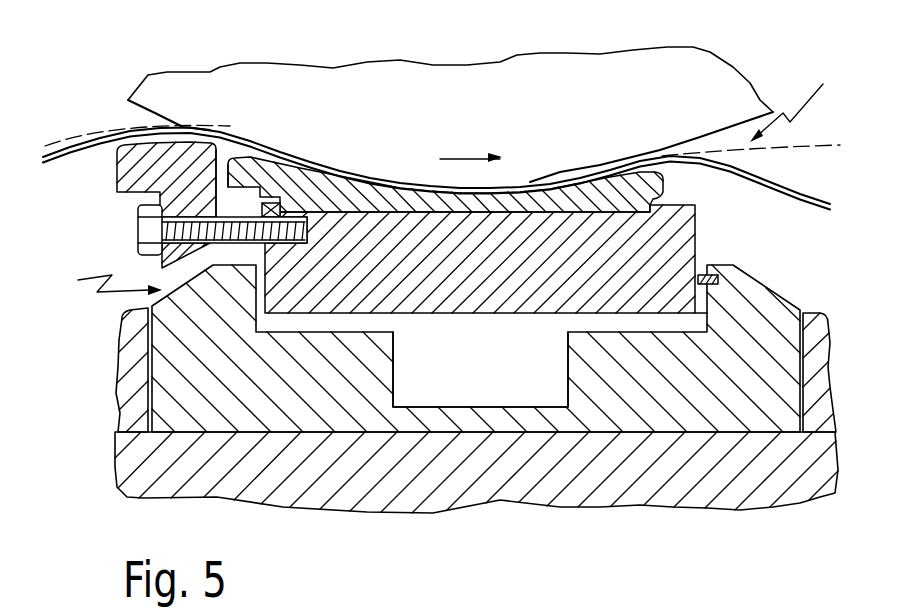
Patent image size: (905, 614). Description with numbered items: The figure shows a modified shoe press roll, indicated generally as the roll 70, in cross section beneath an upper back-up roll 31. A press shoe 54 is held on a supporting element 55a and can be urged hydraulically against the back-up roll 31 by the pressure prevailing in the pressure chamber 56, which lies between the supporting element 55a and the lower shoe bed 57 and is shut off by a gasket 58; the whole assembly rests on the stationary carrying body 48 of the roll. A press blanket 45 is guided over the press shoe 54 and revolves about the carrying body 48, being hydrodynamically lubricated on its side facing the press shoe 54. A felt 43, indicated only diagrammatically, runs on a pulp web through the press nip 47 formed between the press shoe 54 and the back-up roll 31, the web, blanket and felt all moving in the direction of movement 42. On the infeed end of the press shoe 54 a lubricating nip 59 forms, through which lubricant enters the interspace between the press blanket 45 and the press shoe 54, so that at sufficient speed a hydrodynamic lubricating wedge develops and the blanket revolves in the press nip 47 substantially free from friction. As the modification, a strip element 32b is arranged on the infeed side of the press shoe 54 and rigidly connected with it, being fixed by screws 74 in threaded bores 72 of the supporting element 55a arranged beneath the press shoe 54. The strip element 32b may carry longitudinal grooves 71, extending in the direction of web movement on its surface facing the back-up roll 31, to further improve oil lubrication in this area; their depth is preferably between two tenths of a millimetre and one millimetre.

The back-up roll 31 is at (638, 100).
The longitudinal grooves 71 is at (184, 132).
The felt 43 is at (127, 125).
The press blanket 45 is at (803, 188).
The direction of movement 42 is at (463, 158).
The press nip 47 is at (798, 101).
The strip element 32b is at (133, 163).
The lubricating nip 59 is at (227, 157).
The press shoe 54 is at (327, 190).
The supporting element 55a is at (491, 286).
The threaded bores 72 is at (265, 208).
The screws 74 is at (147, 235).
The roll 70 is at (104, 289).
The gasket 58 is at (702, 273).
The shoe bed 57 is at (608, 413).
The pressure chamber 56 is at (485, 382).
The carrying body 48 is at (323, 495).